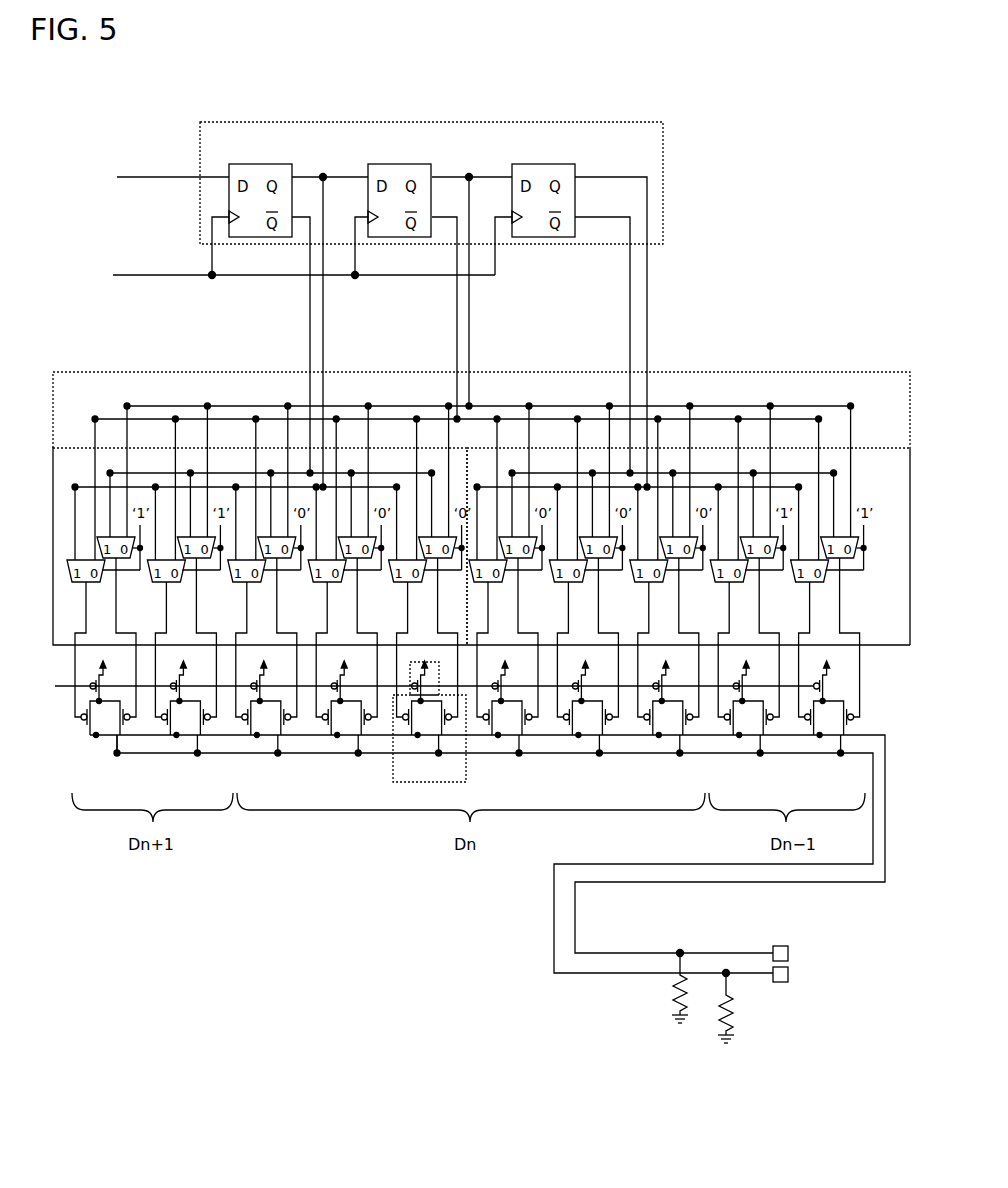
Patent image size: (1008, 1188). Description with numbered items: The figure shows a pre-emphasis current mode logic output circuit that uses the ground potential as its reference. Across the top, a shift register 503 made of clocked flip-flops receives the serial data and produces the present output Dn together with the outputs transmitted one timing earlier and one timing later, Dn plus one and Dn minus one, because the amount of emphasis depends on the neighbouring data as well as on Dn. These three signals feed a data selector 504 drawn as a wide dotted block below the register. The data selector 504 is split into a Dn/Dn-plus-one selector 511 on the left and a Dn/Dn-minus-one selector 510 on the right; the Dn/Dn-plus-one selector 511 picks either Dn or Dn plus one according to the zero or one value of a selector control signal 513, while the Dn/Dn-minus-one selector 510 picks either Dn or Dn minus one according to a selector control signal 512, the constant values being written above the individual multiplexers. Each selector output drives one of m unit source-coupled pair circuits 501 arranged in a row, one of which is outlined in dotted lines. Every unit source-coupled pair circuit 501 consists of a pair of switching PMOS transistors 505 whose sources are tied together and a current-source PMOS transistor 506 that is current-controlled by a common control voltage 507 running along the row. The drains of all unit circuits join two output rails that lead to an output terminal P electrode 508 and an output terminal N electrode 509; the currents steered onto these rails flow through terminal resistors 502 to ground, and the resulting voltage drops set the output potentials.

The unit source-coupled pair circuit 501 is at (430, 778).
The terminal resistors 502 is at (672, 1012).
The shift register 503 is at (398, 150).
The data selector 504 is at (472, 507).
The switching PMOS transistors 505 is at (418, 718).
The current-source PMOS transistor 506 is at (402, 690).
The control voltage 507 is at (50, 688).
The output terminal P electrode 508 is at (790, 951).
The output terminal N electrode 509 is at (790, 977).
The Dn/Dn-1 selector 510 is at (905, 634).
The Dn/Dn+1 selector 511 is at (56, 634).
The selector control signal 512 is at (876, 498).
The selector control signal 513 is at (466, 494).